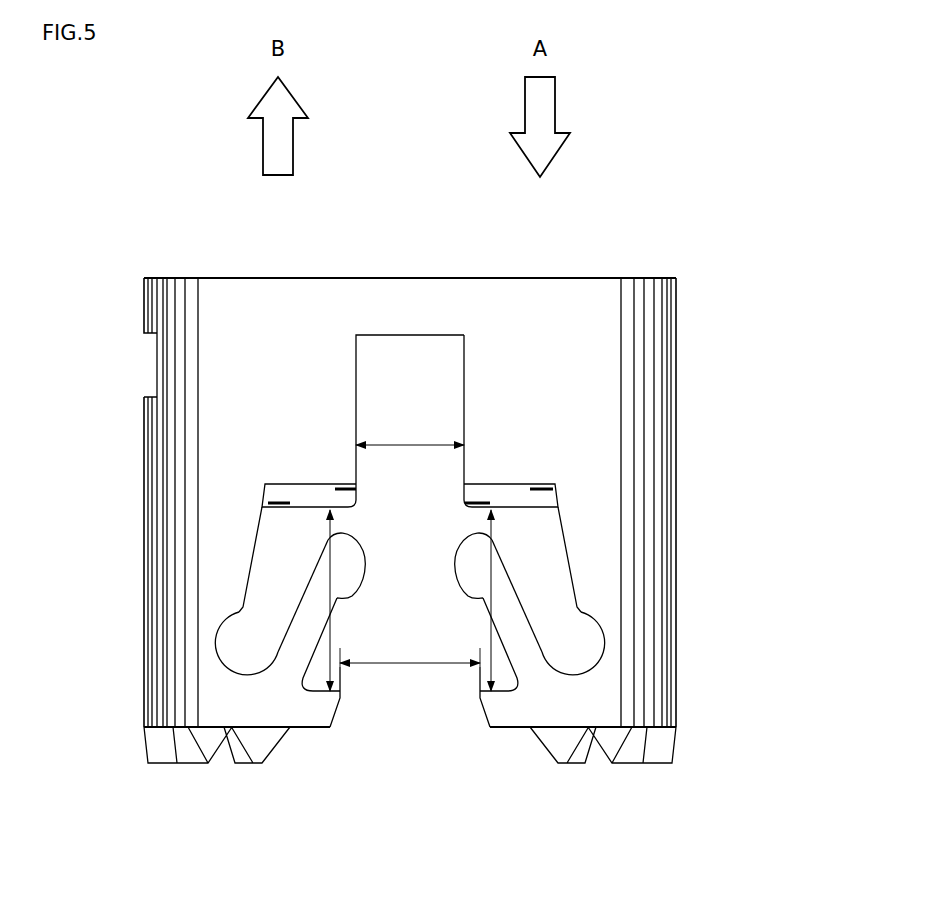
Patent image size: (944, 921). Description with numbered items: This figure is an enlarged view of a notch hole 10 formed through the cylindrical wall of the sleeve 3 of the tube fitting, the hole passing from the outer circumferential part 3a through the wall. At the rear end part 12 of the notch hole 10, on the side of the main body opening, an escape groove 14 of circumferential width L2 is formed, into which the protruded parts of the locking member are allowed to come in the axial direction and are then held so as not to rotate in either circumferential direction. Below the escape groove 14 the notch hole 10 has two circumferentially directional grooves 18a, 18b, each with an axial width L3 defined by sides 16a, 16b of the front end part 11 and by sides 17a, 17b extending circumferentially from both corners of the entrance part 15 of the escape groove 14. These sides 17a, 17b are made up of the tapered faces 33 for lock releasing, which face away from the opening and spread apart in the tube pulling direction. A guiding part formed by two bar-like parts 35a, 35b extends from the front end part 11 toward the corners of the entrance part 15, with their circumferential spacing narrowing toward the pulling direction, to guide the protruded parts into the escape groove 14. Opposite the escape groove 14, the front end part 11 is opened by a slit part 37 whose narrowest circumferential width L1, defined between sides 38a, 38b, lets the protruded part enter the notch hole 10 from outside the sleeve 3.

The sleeve 3 is at (660, 233).
The outer circumferential part 3a is at (562, 360).
The notch hole 10 is at (447, 380).
The front end part 11 is at (295, 705).
The rear end part 12 is at (412, 322).
The escape groove 14 is at (407, 422).
The entrance part 15 is at (405, 527).
The side of front end part 16a is at (316, 688).
The side of front end part 16b is at (504, 688).
The side 17a is at (310, 508).
The side 17b is at (510, 508).
The circumferentially directional groove 18a is at (290, 572).
The circumferentially directional groove 18b is at (530, 572).
The tapered face for lock releasing 33 is at (303, 495).
The guiding part 35a is at (341, 556).
The guiding part 35b is at (473, 553).
The slit part 37 is at (407, 741).
The side 38a is at (346, 710).
The side 38b is at (483, 714).